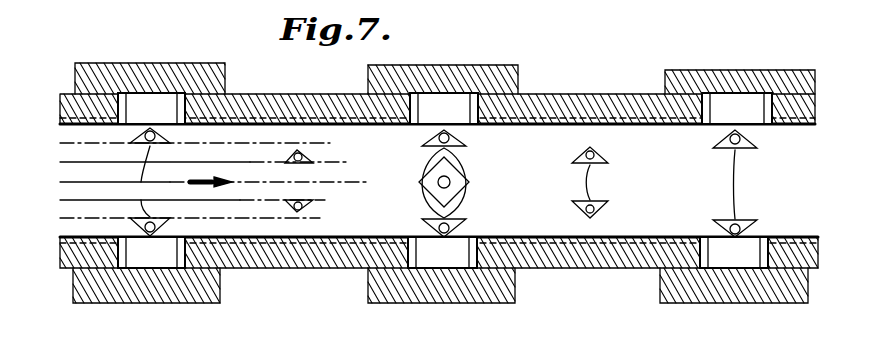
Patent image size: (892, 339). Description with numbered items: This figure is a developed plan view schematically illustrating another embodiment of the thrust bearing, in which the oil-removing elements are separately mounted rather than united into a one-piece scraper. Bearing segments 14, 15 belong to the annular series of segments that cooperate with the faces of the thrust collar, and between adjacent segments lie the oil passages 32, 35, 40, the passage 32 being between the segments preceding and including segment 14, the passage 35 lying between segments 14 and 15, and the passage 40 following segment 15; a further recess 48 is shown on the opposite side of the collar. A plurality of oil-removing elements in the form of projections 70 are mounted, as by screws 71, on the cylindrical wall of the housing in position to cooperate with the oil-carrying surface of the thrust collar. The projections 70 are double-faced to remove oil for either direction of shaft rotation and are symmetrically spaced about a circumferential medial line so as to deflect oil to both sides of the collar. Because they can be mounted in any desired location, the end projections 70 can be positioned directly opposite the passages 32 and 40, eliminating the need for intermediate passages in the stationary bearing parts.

The bearing segment 14 is at (276, 117).
The bearing segment 15 is at (574, 117).
The oil passage 32 is at (143, 108).
The oil passage 35 is at (452, 108).
The oil passage 40 is at (718, 108).
The bearing block 48 is at (434, 258).
The projection 70 is at (290, 157).
The screw 71 is at (766, 172).